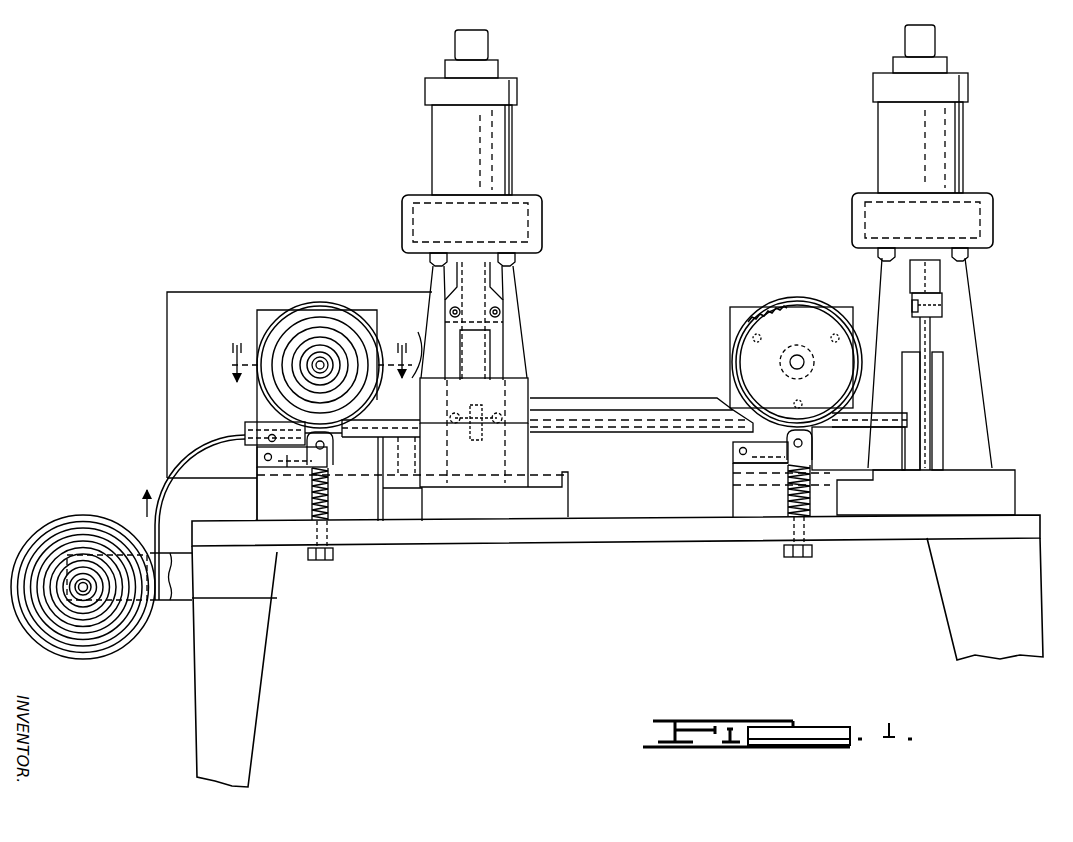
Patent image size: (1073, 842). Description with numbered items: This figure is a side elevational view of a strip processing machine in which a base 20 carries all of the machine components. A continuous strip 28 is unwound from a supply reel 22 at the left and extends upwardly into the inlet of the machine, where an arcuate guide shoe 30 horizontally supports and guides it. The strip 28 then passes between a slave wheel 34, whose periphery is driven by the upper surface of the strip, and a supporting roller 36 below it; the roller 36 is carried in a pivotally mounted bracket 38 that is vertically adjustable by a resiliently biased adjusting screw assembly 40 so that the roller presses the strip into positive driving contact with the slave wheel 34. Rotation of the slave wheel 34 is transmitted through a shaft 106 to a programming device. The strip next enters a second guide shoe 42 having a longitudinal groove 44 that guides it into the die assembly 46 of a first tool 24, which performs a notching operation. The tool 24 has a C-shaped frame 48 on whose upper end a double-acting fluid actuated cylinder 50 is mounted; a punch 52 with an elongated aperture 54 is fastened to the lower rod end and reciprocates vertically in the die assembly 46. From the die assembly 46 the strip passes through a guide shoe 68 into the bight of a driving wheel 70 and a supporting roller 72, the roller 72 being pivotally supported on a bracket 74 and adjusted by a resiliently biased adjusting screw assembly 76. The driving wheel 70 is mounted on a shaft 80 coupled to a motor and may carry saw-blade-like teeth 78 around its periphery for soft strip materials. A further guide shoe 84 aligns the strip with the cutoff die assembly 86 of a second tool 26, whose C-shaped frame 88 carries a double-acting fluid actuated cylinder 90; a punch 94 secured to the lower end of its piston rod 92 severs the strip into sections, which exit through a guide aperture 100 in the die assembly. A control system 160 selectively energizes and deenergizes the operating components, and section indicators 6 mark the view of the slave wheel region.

The section line 6 is at (311, 352).
The base 20 is at (1028, 526).
The supply reel 22 is at (78, 512).
The tool 24 is at (548, 246).
The tool 26 is at (1000, 222).
The strip 28 is at (168, 465).
The arcuate guide shoe 30 is at (200, 452).
The slave wheel 34 is at (300, 317).
The supporting roller 36 is at (337, 452).
The bracket 38 is at (288, 464).
The adjusting screw assembly 40 is at (312, 510).
The second guide shoe 42 is at (390, 437).
The groove 44 is at (395, 488).
The die assembly 46 is at (531, 391).
The C-shaped frame 48 is at (508, 288).
The double-acting fluid actuated cylinder 50 is at (496, 147).
The punch 52 is at (498, 338).
The elongated aperture 54 is at (487, 352).
The guide shoe 68 is at (617, 403).
The driving wheel 70 is at (797, 312).
The supporting roller 72 is at (846, 448).
The bracket 74 is at (733, 466).
The adjusting screw assembly 76 is at (808, 508).
The teeth 78 is at (758, 316).
The shaft 80 is at (797, 368).
The guide shoe 84 is at (930, 363).
The cutoff die assembly 86 is at (951, 389).
The C-shaped frame 88 is at (957, 303).
The double-acting fluid actuated cylinder 90 is at (947, 130).
The piston rod 92 is at (930, 278).
The punch 94 is at (930, 337).
The guide aperture 100 is at (943, 420).
The shaft 106 is at (322, 362).
The control system 160 is at (171, 318).